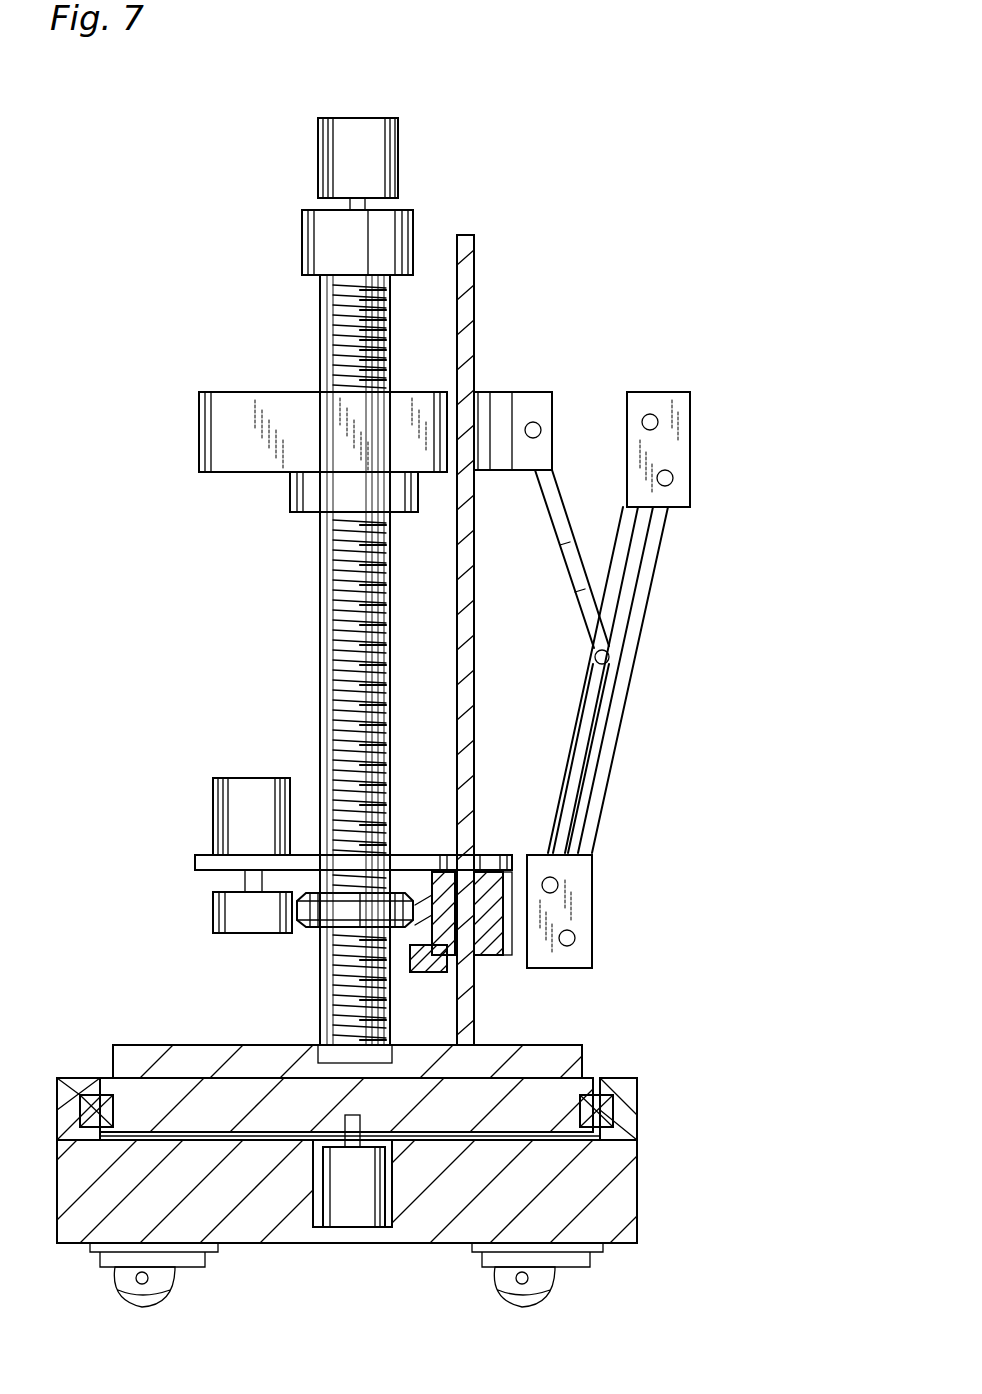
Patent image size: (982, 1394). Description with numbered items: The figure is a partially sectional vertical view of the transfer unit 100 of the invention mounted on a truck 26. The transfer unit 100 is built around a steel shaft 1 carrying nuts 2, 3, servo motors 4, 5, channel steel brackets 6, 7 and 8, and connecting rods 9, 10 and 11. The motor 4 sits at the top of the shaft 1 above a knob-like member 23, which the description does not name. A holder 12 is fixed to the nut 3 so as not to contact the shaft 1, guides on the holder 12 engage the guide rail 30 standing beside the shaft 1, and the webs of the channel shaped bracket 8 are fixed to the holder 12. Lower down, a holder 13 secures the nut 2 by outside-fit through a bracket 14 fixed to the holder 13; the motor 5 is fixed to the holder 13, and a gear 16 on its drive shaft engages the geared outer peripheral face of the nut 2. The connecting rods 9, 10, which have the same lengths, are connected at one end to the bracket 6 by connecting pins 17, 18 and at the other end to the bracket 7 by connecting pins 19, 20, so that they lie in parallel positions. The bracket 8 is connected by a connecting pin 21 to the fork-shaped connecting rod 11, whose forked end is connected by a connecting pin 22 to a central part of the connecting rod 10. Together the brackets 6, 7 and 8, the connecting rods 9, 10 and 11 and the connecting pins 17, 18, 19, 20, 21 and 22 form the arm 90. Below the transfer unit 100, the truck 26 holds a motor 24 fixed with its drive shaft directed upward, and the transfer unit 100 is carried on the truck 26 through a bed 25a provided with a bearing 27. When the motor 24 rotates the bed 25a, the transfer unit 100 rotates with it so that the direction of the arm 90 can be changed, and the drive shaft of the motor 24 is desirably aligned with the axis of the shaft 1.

The steel shaft 1 is at (332, 328).
The nut 2 is at (300, 930).
The nut 3 is at (298, 488).
The motor with servo mechanism 4 is at (395, 140).
The motor with servo mechanism 5 is at (245, 780).
The bracket 6 is at (595, 906).
The bracket 7 is at (690, 436).
The bracket 8 is at (533, 393).
The connecting rod 9 is at (645, 598).
The connecting rod 10 is at (580, 745).
The fork-shaped connecting rod 11 is at (562, 537).
The holder 12 is at (210, 410).
The holder 13 is at (200, 856).
The bracket 14 is at (485, 952).
The gear 16 is at (215, 915).
The connecting pin 17 is at (558, 885).
The connecting pin 18 is at (575, 940).
The connecting pin 19 is at (650, 414).
The connecting pin 20 is at (673, 480).
The connecting pin 21 is at (538, 428).
The connecting pin 22 is at (595, 656).
The knob 23 is at (313, 228).
The motor 24 is at (345, 1215).
The bed 25a is at (180, 1085).
The truck 26 is at (668, 1203).
The bearing 27 is at (625, 1110).
The guide rail 30 is at (474, 240).
The arm 90 is at (710, 367).
The transfer unit 100 is at (790, 70).